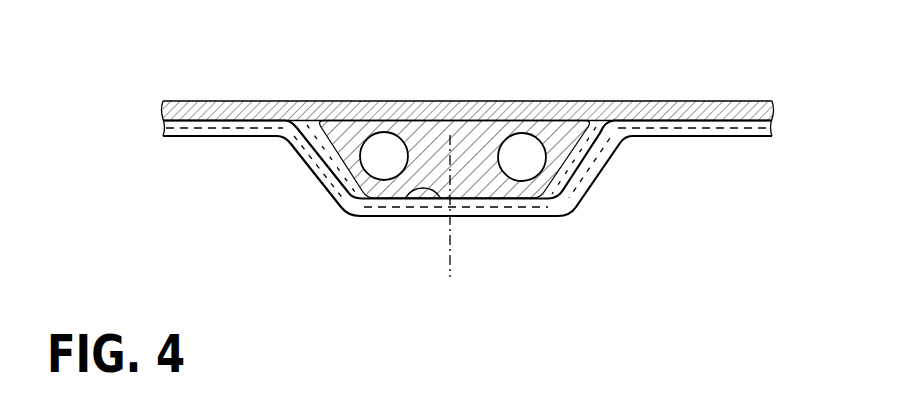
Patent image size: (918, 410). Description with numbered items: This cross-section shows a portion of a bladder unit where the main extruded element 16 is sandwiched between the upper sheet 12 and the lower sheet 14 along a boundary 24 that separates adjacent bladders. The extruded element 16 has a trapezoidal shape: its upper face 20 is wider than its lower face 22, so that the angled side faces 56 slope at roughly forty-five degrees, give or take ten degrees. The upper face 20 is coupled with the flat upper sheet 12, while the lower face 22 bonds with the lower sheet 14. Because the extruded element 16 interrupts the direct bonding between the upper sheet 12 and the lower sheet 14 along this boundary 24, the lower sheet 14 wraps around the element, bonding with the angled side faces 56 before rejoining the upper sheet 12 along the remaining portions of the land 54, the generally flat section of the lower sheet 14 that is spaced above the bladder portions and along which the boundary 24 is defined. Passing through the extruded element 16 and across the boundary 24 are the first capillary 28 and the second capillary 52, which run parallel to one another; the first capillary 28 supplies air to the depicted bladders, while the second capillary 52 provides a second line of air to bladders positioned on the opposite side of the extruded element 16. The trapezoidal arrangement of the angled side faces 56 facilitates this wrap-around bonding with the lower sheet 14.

The upper sheet 12 is at (232, 115).
The lower sheet 14 is at (342, 190).
The main extruded element 16 is at (457, 133).
The upper face 20 is at (499, 120).
The lower face 22 is at (502, 200).
The boundary 24 is at (452, 233).
The first capillary 28 is at (557, 140).
The second capillary 52 is at (383, 137).
The land 54 is at (405, 200).
The angled side face 56 is at (313, 165).